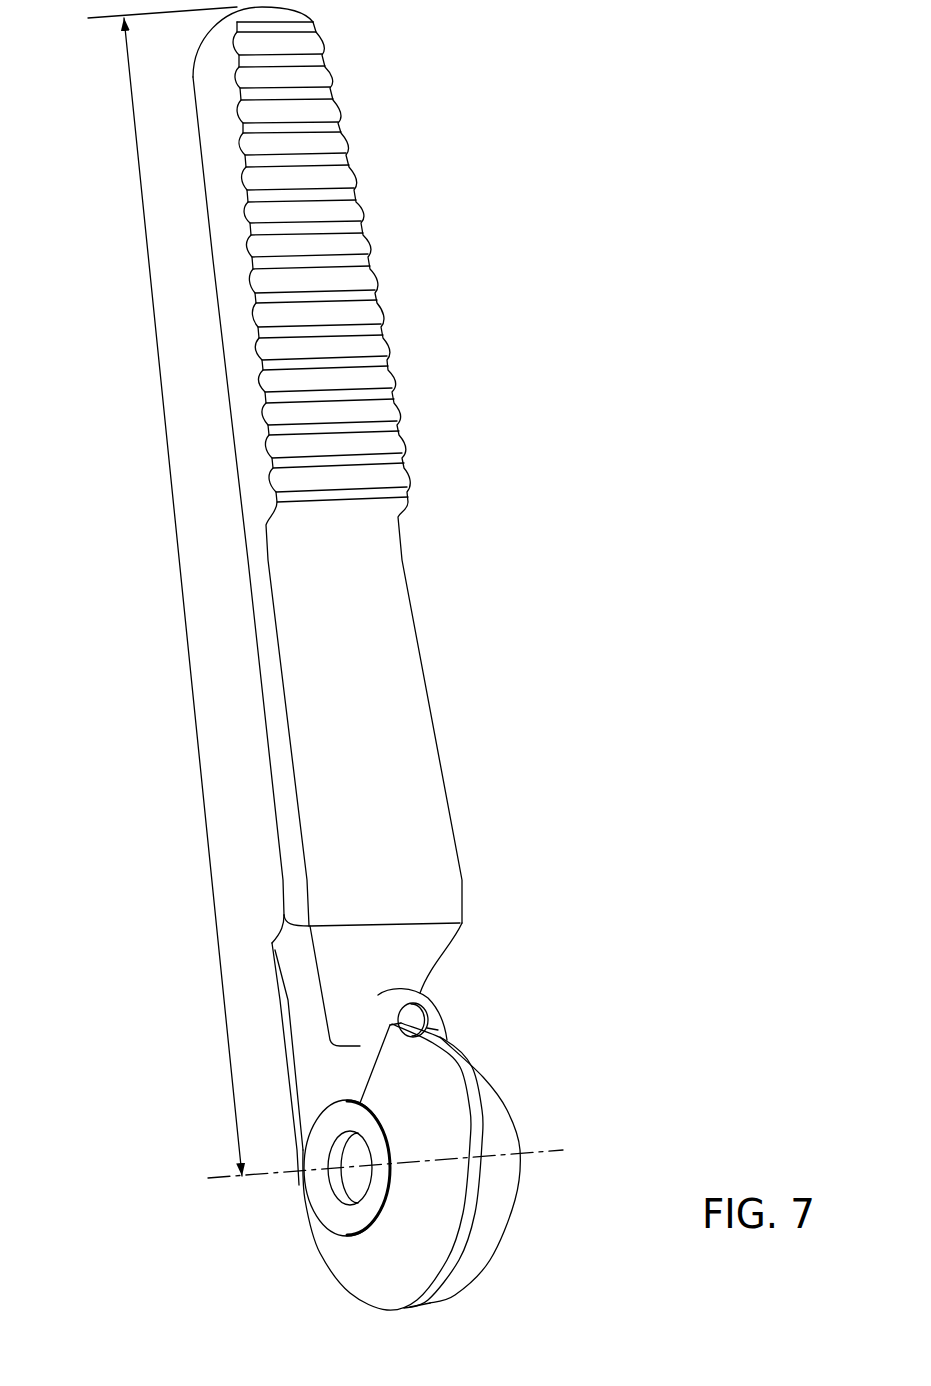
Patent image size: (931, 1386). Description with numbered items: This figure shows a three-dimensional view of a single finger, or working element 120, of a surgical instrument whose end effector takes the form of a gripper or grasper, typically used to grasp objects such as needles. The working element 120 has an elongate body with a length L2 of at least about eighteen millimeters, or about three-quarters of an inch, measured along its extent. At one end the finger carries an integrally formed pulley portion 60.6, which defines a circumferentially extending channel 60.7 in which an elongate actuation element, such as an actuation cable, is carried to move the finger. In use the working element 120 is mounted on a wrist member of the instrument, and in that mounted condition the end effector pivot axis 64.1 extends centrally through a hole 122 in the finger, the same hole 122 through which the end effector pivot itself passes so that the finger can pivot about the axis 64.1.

The working element 120 is at (435, 205).
The pulley portion 60.6 is at (430, 1090).
The circumferentially extending channel 60.7 is at (498, 1160).
The end effector pivot axis 64.1 is at (547, 1150).
The hole 122 is at (355, 1177).
The length L2 is at (190, 660).